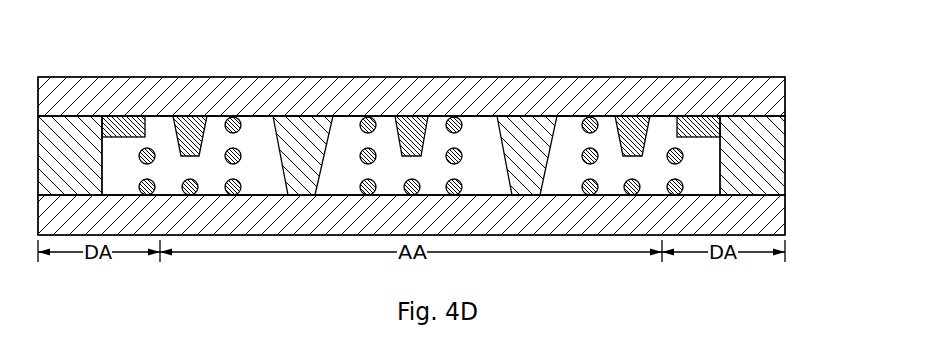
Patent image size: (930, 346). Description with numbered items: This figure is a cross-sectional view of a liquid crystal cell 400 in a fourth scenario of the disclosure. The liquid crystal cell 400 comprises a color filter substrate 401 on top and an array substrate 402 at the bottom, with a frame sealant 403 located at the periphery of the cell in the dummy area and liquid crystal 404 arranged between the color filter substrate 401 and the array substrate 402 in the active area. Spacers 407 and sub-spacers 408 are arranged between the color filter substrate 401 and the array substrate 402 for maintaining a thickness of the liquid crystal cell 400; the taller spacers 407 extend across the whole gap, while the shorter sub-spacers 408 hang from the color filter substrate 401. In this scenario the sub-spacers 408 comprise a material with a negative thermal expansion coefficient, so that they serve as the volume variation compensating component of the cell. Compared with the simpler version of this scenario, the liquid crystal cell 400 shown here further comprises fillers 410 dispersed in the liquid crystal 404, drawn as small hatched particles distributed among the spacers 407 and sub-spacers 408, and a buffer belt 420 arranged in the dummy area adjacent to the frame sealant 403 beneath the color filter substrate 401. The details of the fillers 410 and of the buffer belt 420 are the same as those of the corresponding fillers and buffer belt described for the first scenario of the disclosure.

The liquid crystal cell 400 is at (82, 60).
The color filter substrate 401 is at (843, 87).
The array substrate 402 is at (843, 207).
The frame sealant 403 is at (843, 147).
The liquid crystal 404 is at (347, 135).
The spacer 407 is at (523, 135).
The sub-spacer 408 is at (637, 135).
The filler 410 is at (680, 150).
The buffer belt 420 is at (123, 122).